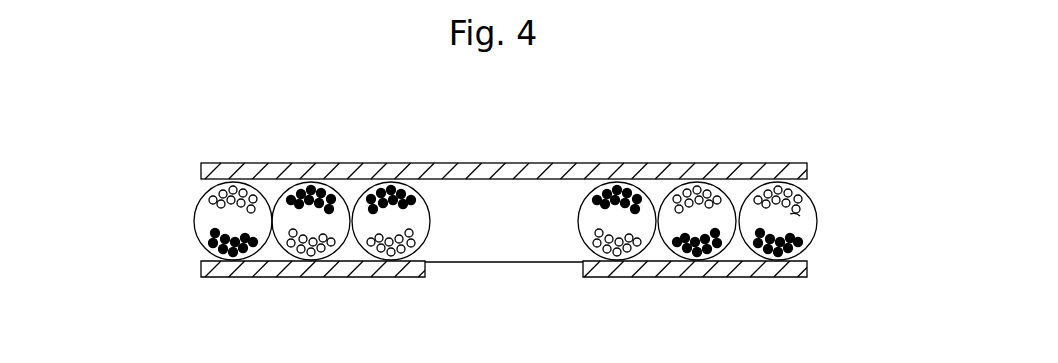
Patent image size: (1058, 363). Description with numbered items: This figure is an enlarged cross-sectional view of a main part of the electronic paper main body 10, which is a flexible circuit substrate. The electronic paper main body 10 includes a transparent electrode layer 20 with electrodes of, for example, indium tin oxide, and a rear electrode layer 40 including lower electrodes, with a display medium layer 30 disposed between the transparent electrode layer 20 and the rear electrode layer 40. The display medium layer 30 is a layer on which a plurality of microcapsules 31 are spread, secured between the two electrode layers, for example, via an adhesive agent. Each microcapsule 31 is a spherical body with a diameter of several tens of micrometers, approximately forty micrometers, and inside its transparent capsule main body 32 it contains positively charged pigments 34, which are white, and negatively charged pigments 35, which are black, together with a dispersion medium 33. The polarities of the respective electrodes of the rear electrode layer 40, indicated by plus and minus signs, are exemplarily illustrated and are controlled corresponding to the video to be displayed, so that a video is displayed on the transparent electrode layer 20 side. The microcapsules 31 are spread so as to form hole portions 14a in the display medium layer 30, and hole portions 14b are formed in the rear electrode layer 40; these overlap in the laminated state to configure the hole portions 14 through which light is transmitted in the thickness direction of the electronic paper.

The electronic paper main body 10 is at (140, 163).
The hole portion 14 is at (518, 238).
The hole portion 14a is at (494, 200).
The hole portion 14b is at (445, 270).
The transparent electrode layer 20 is at (201, 176).
The display medium layer 30 is at (196, 222).
The microcapsule 31 is at (865, 163).
The transparent capsule main body 32 is at (815, 212).
The dispersion medium 33 is at (802, 226).
The positively charged pigment 34 is at (798, 195).
The negatively charged pigment 35 is at (802, 240).
The rear electrode layer 40 is at (201, 268).